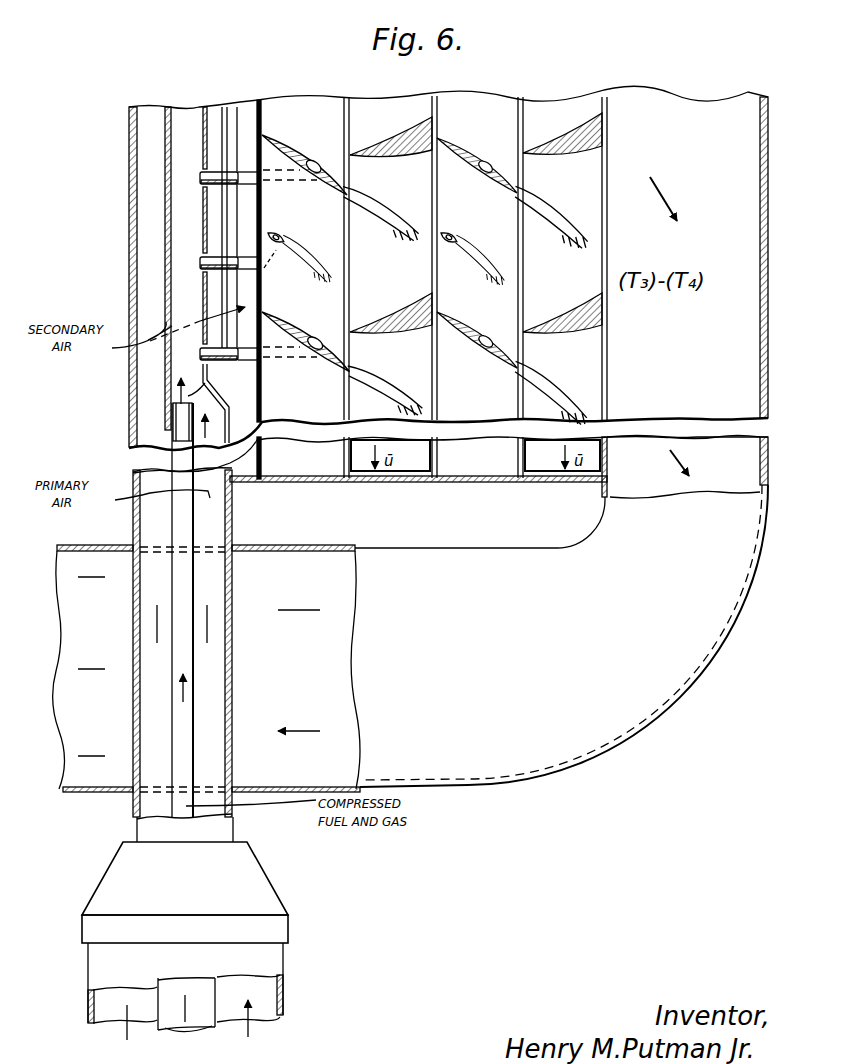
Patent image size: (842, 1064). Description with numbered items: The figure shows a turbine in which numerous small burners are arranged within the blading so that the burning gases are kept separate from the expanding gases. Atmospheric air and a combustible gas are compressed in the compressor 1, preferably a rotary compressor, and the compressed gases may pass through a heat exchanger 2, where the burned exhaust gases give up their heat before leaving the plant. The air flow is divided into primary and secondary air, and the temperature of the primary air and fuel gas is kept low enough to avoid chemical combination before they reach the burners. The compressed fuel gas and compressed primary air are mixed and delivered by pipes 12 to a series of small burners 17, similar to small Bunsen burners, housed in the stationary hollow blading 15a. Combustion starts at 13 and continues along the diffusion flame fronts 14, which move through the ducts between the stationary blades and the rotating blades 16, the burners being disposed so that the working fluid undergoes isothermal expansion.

The compressor 1 is at (258, 897).
The heat exchanger 2 is at (113, 803).
The pipes 12 is at (218, 165).
The combustion start 13 is at (341, 182).
The diffusion flame fronts 14 is at (378, 203).
The stationary hollow blading 15a is at (306, 153).
The rotating blades 16 is at (399, 141).
The small burners 17 is at (288, 214).